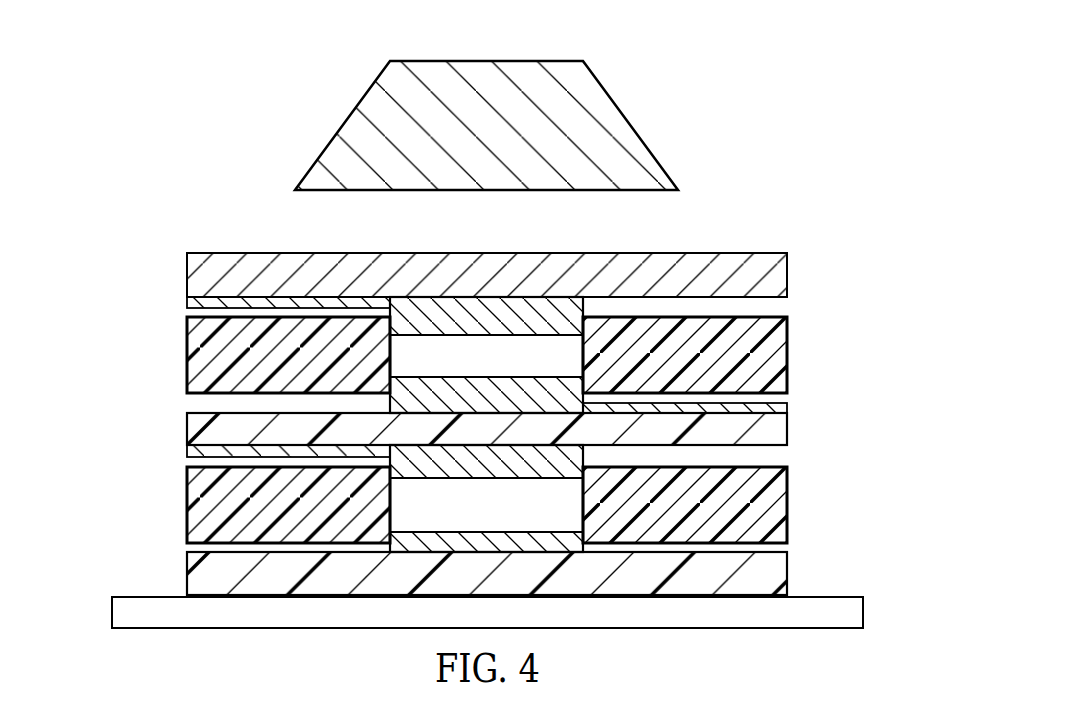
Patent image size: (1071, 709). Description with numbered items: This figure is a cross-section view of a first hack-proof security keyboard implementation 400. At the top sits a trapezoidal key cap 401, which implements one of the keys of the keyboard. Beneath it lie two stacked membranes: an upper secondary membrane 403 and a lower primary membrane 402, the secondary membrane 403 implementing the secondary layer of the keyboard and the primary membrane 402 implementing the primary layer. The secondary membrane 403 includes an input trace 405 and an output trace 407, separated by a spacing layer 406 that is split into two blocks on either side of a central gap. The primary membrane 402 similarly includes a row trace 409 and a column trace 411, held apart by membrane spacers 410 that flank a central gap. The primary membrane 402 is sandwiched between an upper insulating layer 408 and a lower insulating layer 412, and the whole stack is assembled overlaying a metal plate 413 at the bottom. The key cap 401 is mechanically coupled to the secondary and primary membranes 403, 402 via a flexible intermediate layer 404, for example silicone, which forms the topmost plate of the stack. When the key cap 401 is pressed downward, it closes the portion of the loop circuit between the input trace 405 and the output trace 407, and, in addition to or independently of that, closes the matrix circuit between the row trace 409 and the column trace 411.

The hack-proof security keyboard implementation 400 is at (661, 73).
The key cap 401 is at (352, 127).
The primary membrane 402 is at (111, 437).
The secondary membrane 403 is at (111, 279).
The flexible intermediate layer 404 is at (778, 275).
The input trace 405 is at (190, 300).
The spacing layer 406 is at (778, 356).
The output trace 407 is at (786, 405).
The insulating layer 408 is at (778, 432).
The row trace 409 is at (192, 453).
The membrane spacers 410 is at (778, 497).
The column trace 411 is at (517, 537).
The insulating layer 412 is at (778, 567).
The metal plate 413 is at (852, 613).